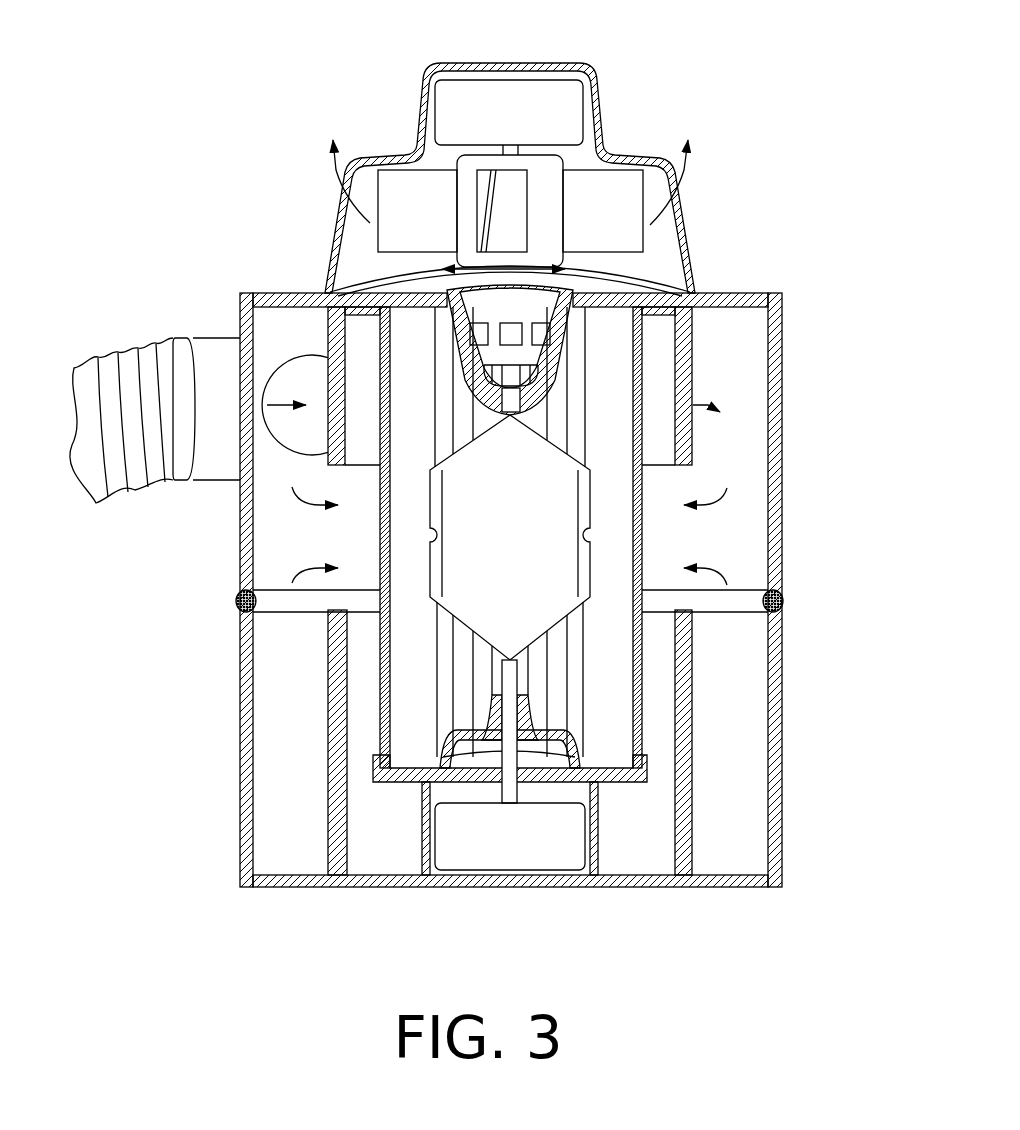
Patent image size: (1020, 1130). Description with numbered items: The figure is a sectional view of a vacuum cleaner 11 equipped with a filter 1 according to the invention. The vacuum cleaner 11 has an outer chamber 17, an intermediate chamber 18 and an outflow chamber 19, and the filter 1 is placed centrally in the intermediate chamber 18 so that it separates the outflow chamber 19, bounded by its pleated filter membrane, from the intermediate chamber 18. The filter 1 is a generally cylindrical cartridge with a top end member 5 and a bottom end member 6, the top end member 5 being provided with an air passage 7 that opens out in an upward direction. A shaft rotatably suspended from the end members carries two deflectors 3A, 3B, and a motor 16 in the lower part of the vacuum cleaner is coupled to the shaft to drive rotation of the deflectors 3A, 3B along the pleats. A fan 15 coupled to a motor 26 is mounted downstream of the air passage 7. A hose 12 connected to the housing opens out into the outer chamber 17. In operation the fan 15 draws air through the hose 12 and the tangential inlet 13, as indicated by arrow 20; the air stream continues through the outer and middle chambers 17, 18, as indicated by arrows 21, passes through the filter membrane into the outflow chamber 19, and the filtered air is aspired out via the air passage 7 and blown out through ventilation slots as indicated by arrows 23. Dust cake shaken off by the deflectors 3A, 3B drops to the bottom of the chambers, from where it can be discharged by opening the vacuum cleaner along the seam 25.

The filter 1 is at (662, 488).
The deflector 3A is at (605, 597).
The deflector 3B is at (415, 597).
The top end member 5 is at (640, 287).
The bottom end member 6 is at (618, 775).
The air passage 7 is at (498, 298).
The vacuum cleaner 11 is at (799, 114).
The hose 12 is at (160, 370).
The tangential inlet 13 is at (278, 367).
The fan 15 is at (545, 160).
The motor 16 is at (508, 845).
The outer chamber 17 is at (728, 775).
The intermediate chamber 18 is at (655, 733).
The outflow chamber 19 is at (610, 688).
The arrow 20 is at (282, 400).
The arrows 21 is at (303, 570).
The arrows 23 is at (332, 162).
The seam 25 is at (786, 601).
The motor 26 is at (478, 100).